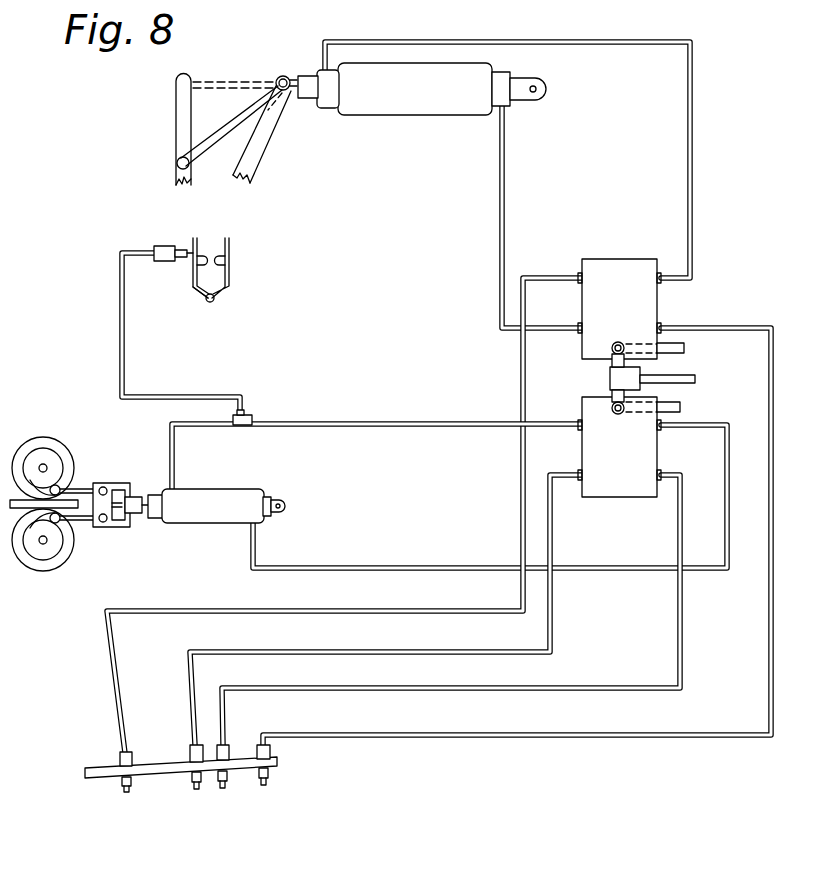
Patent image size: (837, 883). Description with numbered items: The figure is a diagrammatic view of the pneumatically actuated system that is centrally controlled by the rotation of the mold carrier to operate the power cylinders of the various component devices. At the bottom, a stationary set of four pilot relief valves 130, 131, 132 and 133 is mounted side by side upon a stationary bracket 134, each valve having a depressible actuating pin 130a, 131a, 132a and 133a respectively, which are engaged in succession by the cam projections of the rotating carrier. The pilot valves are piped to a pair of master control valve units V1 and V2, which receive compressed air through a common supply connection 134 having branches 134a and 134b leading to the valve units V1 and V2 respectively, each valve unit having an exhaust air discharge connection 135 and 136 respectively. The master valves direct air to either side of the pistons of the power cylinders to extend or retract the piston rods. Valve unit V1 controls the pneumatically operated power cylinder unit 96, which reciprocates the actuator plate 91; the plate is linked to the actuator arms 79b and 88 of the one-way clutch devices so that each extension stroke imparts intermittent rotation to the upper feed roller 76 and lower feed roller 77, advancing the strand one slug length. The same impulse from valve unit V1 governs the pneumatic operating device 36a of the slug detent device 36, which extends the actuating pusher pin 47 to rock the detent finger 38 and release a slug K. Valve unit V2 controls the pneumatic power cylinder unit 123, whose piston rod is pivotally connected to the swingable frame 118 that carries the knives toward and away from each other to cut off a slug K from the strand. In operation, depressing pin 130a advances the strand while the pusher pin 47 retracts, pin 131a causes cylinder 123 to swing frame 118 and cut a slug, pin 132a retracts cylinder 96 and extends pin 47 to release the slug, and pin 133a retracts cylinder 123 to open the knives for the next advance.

The swingable frame 118 is at (263, 140).
The pneumatic power cylinder unit 123 is at (461, 110).
The master control valve unit V2 is at (646, 253).
The pneumatic operating device 36a is at (163, 246).
The detent device 36 is at (245, 249).
The actuating pusher pin 47 is at (183, 259).
The detent finger 38 is at (197, 292).
The slug K is at (212, 303).
The exhaust air discharge connection 136 is at (668, 345).
The common compressed air supply connection 134 is at (662, 378).
The branch 134b is at (606, 360).
The branch 134a is at (613, 412).
The exhaust air discharge connection 135 is at (672, 413).
The master control valve unit V1 is at (632, 505).
The upper feed roller 76 is at (60, 447).
The actuating arm 79b is at (57, 480).
The reciprocable actuator plate 91 is at (128, 488).
The actuator arm 88 is at (58, 534).
The lower feed roller 77 is at (41, 573).
The pneumatically operated power cylinder unit 96 is at (201, 517).
The pilot relief valve 133 is at (120, 782).
The depressible actuating pin 133a is at (126, 796).
The pilot relief valve 130 is at (192, 777).
The depressible actuating pin 130a is at (199, 793).
The pilot relief valve 132 is at (231, 774).
The depressible actuating pin 132a is at (223, 792).
The pilot relief valve 131 is at (270, 782).
The depressible actuating pin 131a is at (268, 800).